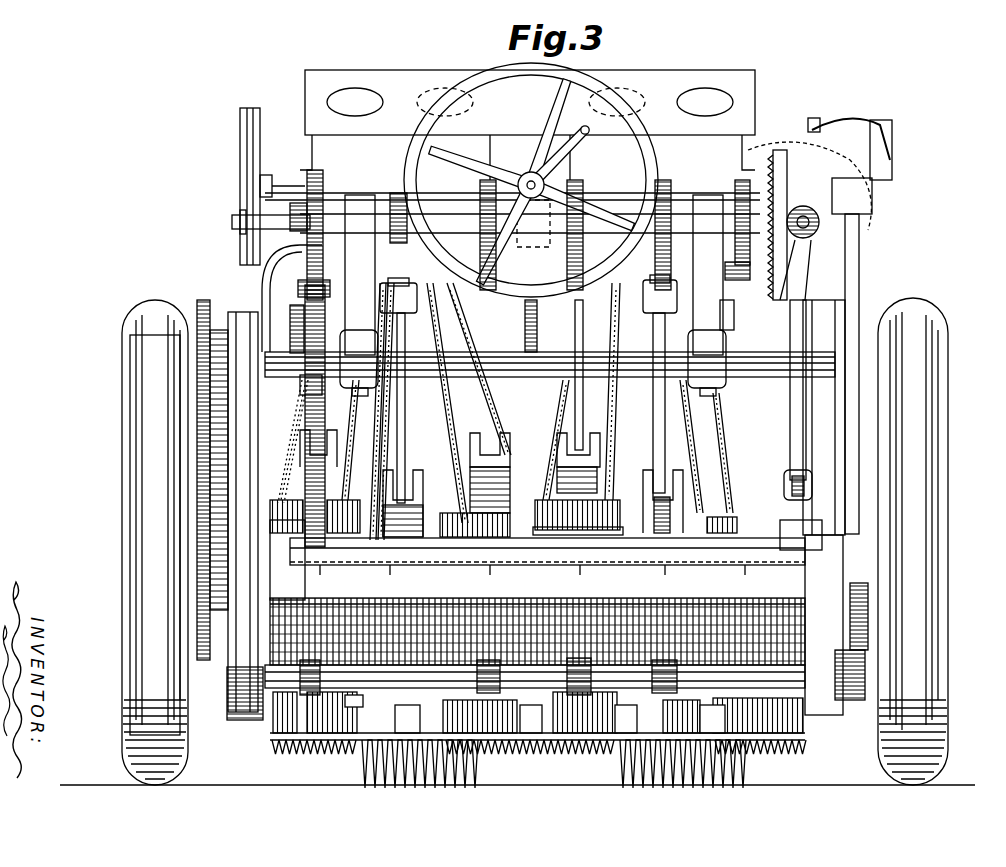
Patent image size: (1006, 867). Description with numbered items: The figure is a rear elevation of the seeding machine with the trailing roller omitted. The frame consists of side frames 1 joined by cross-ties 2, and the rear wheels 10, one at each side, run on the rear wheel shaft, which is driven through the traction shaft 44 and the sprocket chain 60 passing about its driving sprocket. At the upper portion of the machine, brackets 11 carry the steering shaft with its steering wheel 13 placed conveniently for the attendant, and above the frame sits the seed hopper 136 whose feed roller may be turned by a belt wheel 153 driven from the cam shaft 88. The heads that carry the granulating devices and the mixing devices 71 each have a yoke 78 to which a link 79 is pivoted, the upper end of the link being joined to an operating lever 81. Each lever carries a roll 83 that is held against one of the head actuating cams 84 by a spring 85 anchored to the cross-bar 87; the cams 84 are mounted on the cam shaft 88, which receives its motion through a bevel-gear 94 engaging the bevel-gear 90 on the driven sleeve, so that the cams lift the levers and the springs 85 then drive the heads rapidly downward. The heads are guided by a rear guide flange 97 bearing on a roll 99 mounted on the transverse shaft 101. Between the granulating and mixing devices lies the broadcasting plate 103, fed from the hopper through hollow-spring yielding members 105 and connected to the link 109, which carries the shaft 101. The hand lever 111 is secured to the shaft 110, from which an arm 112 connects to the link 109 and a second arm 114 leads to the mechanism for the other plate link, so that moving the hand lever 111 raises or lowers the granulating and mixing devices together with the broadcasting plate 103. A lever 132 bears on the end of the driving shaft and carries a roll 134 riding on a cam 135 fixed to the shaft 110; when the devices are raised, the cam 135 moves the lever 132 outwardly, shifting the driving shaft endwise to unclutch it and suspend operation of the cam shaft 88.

The side frames 1 is at (248, 444).
The cross-ties 2 is at (550, 374).
The rear wheels 10 is at (122, 418).
The brackets 11 is at (873, 192).
The steering wheel 13 is at (531, 180).
The traction shaft 44 is at (216, 290).
The sprocket chain 60 is at (200, 415).
The mixing devices 71 is at (365, 768).
The yoke 78 is at (557, 468).
The link 79 is at (397, 330).
The operating lever 81 is at (306, 305).
The roll 83 is at (300, 288).
The head actuating cams 84 is at (400, 195).
The spring 85 is at (308, 390).
The cross-bar 87 is at (537, 619).
The cam shaft 88 is at (240, 236).
The bevel-gear 90 is at (805, 253).
The bevel-gear 94 is at (780, 150).
The rear guide flange 97 is at (650, 690).
The roll 99 is at (266, 740).
The transverse shaft 101 is at (360, 705).
The broadcasting plate 103 is at (545, 742).
The yielding members 105 is at (500, 395).
The link 109 is at (262, 658).
The shaft 110 is at (645, 510).
The hand lever 111 is at (860, 266).
The arm 112 is at (300, 582).
The second arm 114 is at (397, 462).
The lever 132 is at (722, 306).
The roll 134 is at (812, 488).
The cam 135 is at (805, 522).
The seed hopper 136 is at (310, 82).
The belt wheel 153 is at (258, 121).